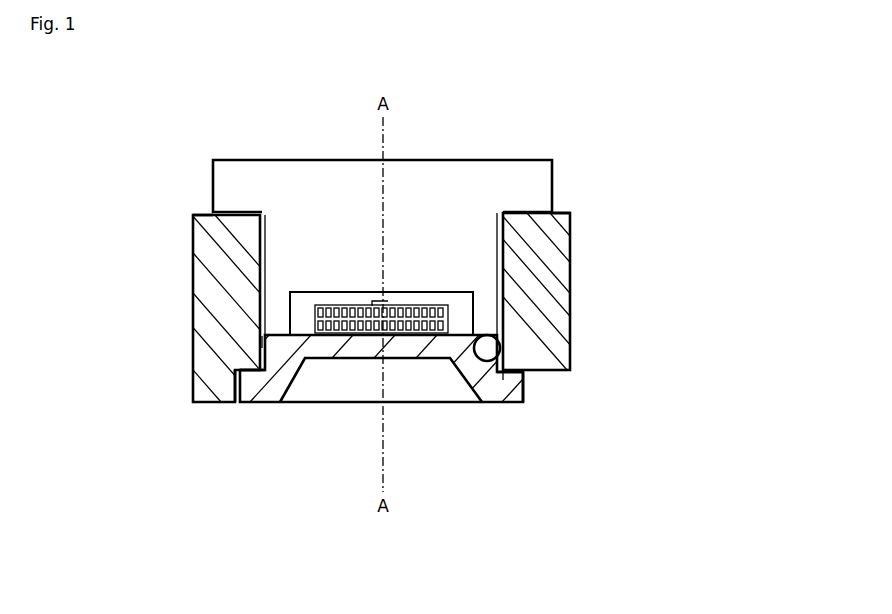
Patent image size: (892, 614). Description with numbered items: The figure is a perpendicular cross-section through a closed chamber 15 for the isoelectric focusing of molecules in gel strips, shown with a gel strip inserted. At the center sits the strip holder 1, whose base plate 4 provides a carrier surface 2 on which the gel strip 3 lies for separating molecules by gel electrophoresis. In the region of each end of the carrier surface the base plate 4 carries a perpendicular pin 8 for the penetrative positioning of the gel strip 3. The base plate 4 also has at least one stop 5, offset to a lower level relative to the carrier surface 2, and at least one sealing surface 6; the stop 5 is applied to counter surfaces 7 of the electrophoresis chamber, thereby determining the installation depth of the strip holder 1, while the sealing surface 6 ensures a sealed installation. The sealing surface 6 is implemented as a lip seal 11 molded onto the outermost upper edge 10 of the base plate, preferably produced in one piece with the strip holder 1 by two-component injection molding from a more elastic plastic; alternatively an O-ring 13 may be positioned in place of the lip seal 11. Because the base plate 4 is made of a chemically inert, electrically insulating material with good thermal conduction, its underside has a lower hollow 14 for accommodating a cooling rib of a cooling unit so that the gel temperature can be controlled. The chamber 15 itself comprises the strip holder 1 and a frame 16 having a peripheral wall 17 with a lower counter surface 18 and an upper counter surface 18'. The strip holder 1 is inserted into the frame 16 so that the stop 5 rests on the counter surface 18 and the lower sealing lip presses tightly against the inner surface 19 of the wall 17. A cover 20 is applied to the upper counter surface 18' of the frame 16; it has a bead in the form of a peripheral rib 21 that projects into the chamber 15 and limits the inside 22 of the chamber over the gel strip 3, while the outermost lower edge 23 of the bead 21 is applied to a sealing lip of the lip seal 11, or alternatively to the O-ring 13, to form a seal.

The strip holder 1 is at (352, 425).
The carrier surface 2 is at (407, 328).
The gel strip 3 is at (339, 325).
The base plate 4 is at (412, 350).
The stop 5 is at (262, 380).
The sealing surface 6 is at (505, 352).
The counter surfaces 7 is at (263, 378).
The perpendicular pin 8 is at (386, 300).
The outermost upper edge 10 is at (262, 344).
The lip seal 11 is at (262, 350).
The O-ring 13 is at (527, 373).
The lower hollow 14 is at (351, 384).
The chamber 15 is at (663, 112).
The frame 16 is at (575, 248).
The peripheral wall 17 is at (303, 308).
The lower counter surface 18 is at (407, 428).
The upper counter surface 18' is at (379, 140).
The inner surface 19 is at (265, 286).
The cover 20 is at (298, 209).
The peripheral rib 21 is at (274, 336).
The inside of the chamber 22 is at (336, 326).
The outermost lower edge 23 is at (266, 340).